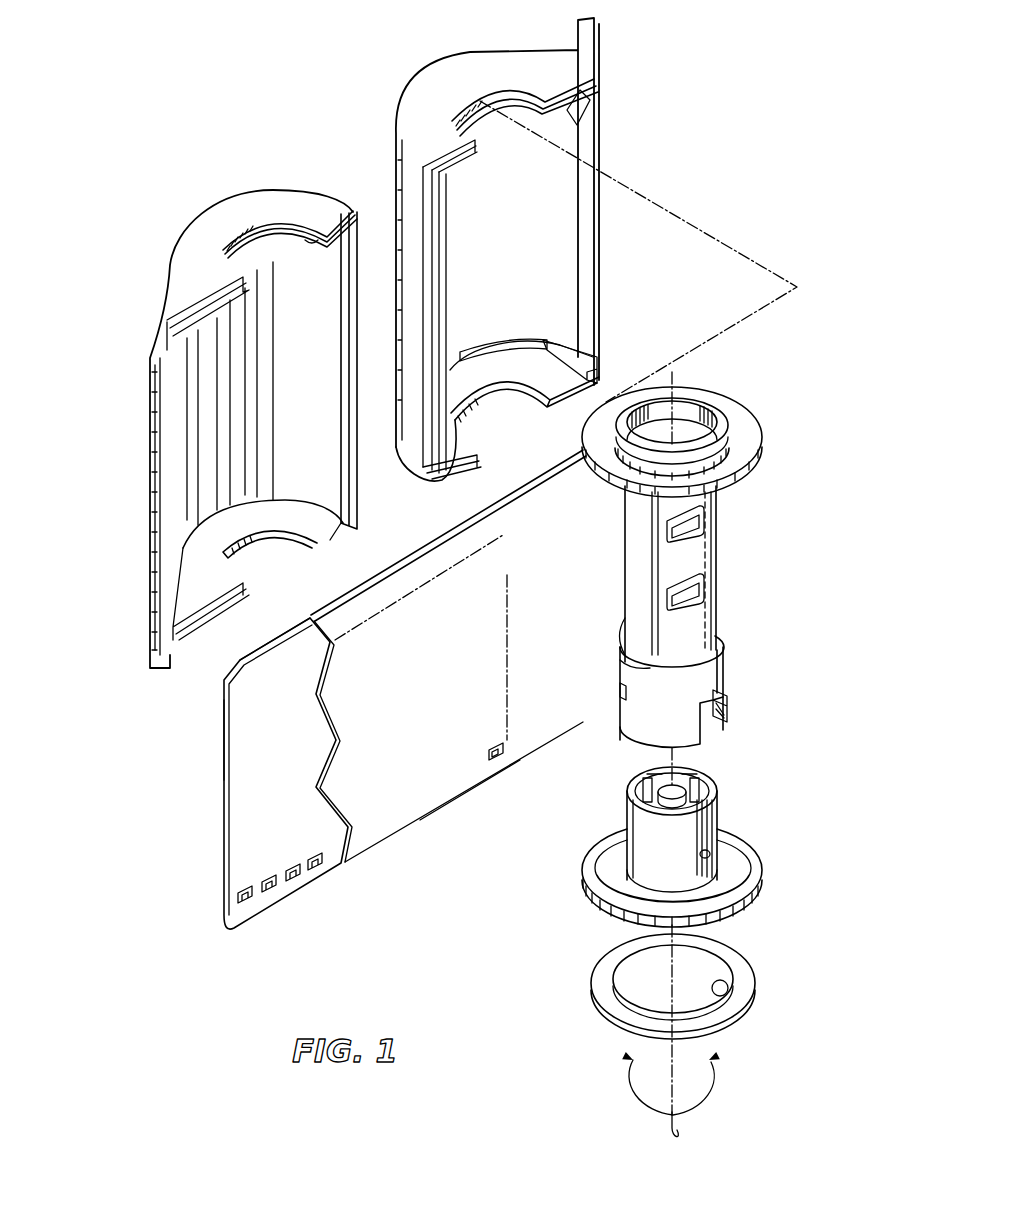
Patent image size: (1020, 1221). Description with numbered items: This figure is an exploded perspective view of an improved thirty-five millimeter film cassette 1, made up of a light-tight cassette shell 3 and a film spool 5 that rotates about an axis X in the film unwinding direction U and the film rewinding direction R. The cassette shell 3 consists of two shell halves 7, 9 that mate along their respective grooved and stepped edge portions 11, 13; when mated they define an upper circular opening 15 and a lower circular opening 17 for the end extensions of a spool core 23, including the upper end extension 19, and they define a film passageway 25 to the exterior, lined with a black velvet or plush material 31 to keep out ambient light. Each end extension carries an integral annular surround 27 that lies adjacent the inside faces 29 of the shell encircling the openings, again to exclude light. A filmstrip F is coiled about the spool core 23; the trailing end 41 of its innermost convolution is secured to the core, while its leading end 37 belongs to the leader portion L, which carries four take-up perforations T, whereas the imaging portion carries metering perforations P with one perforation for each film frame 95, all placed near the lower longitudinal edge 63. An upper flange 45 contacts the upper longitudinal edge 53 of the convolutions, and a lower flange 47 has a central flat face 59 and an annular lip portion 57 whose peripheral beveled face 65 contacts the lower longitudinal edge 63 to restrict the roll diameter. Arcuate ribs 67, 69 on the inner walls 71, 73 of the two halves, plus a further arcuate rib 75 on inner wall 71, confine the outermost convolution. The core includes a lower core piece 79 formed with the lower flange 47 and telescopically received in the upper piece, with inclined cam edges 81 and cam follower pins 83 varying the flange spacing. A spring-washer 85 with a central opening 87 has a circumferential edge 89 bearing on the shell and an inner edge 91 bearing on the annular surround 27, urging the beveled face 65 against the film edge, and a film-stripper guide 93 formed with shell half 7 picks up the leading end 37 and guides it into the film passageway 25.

The film cassette 1 is at (323, 127).
The cassette shell 3 is at (393, 133).
The film spool 5 is at (743, 528).
The shell half 7 is at (520, 268).
The shell half 9 is at (400, 339).
The grooved and stepped edge portion 11 is at (463, 473).
The grooved and stepped edge portion 13 is at (330, 546).
The upper circular opening 15 is at (277, 237).
The lower circular opening 17 is at (266, 536).
The upper end extension 19 is at (725, 413).
The spool core 23 is at (689, 696).
The film passageway 25 is at (168, 484).
The annular surround 27 is at (727, 450).
The inside face 29 is at (198, 574).
The black velvet or plush material 31 is at (156, 408).
The leading end 37 is at (222, 742).
The trailing end 41 is at (700, 562).
The upper flange 45 is at (597, 487).
The lower flange 47 is at (661, 880).
The upper longitudinal edge 53 is at (410, 538).
The annular lip portion 57 is at (720, 913).
The central flat face 59 is at (617, 852).
The lower longitudinal edge 63 is at (453, 800).
The peripheral beveled face 65 is at (613, 840).
The arcuate rib 67 is at (573, 107).
The arcuate rib 69 is at (312, 252).
The inner wall 71 is at (521, 234).
The inner wall 73 is at (287, 393).
The arcuate rib 75 is at (490, 350).
The lower core piece 79 is at (633, 668).
The cam edge 81 is at (620, 688).
The cam follower pin 83 is at (720, 858).
The spring-washer 85 is at (678, 1000).
The central opening 87 is at (635, 970).
The circumferential edge 89 is at (742, 1002).
The inner edge 91 is at (722, 990).
The film-stripper guide 93 is at (600, 377).
The film frame 95 is at (512, 615).
The filmstrip F is at (368, 709).
The leader portion L is at (246, 803).
The metering perforation P is at (495, 757).
The take-up perforation T is at (244, 903).
The film rewinding direction R is at (633, 1060).
The film unwinding direction U is at (709, 1060).
The axis X is at (660, 1134).